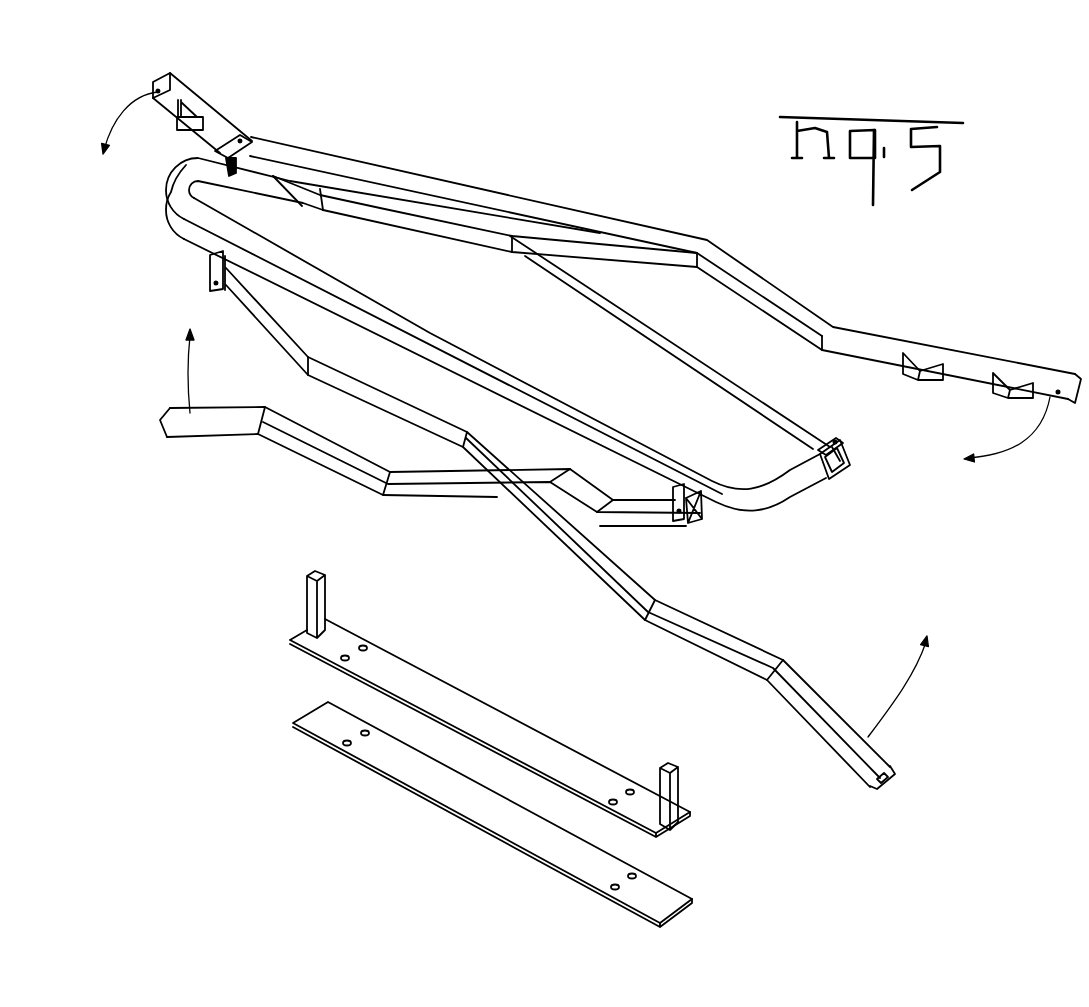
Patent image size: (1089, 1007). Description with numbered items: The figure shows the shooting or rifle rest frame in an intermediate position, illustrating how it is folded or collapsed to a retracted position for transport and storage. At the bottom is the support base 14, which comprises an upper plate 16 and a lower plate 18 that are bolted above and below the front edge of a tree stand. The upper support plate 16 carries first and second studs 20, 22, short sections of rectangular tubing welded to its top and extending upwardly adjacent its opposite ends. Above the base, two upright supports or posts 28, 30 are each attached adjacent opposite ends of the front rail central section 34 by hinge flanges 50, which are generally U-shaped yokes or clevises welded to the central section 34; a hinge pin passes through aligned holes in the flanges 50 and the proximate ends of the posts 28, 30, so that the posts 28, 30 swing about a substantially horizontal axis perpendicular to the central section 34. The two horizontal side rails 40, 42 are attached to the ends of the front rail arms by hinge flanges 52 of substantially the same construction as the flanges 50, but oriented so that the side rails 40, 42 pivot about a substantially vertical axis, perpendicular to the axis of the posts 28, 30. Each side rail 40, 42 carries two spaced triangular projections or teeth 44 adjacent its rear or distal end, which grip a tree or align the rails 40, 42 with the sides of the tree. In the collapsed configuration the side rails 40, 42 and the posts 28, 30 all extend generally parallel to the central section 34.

The support base 14 is at (498, 731).
The upper support plate 16 is at (491, 720).
The lower plate 18 is at (470, 800).
The first stud 20 is at (307, 583).
The second stud 22 is at (673, 783).
The upright support or post 28 is at (713, 627).
The upright support or post 30 is at (223, 441).
The central section 34 is at (457, 352).
The side rail 40 is at (487, 190).
The side rail 42 is at (770, 402).
The triangular projections or teeth 44 is at (190, 120).
The hinge flange 50 is at (210, 284).
The hinge flange 52 is at (243, 140).